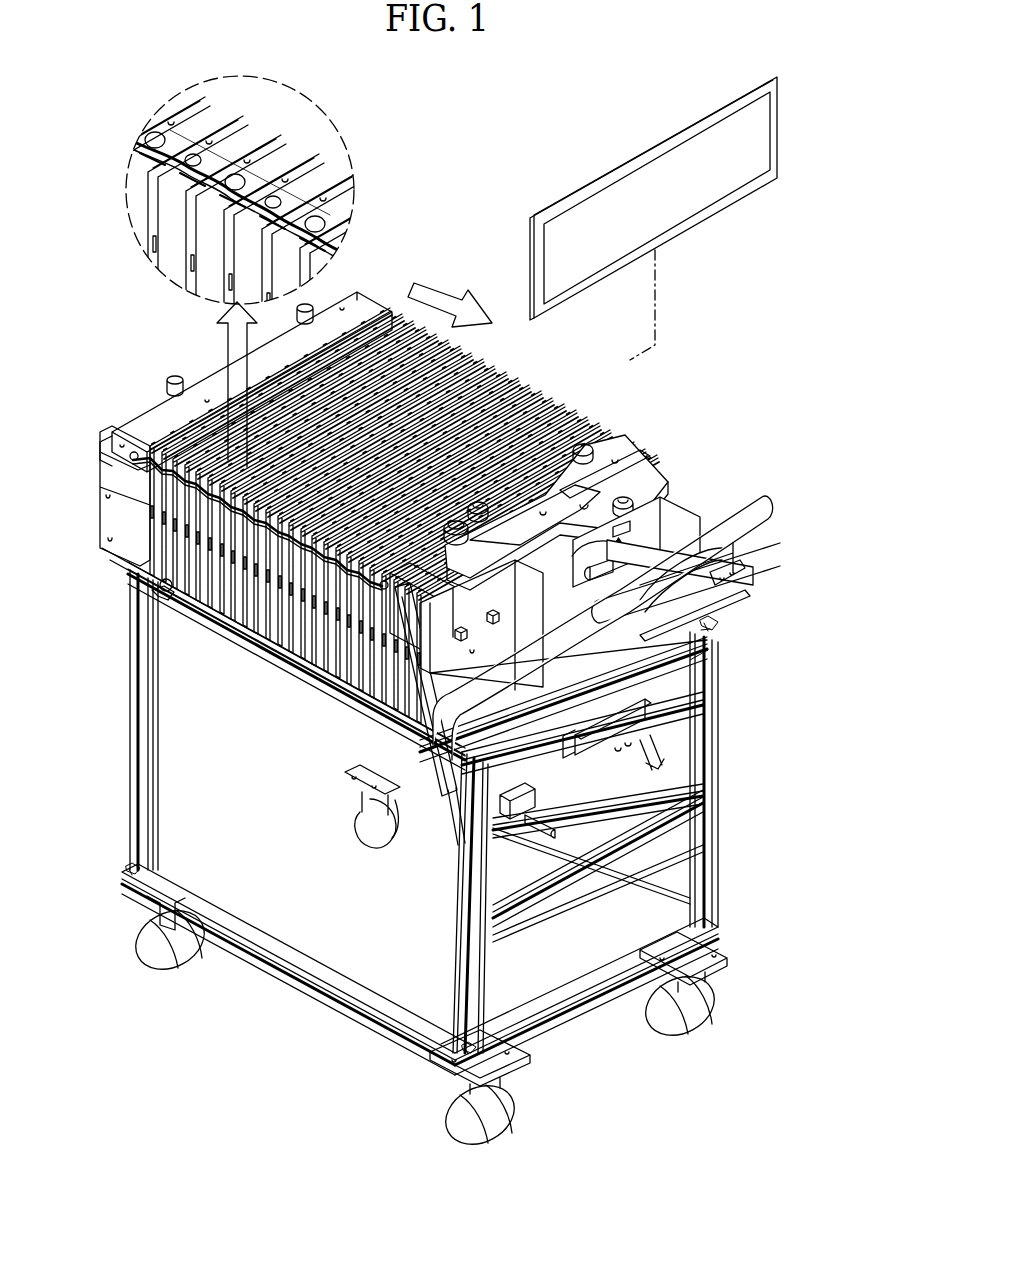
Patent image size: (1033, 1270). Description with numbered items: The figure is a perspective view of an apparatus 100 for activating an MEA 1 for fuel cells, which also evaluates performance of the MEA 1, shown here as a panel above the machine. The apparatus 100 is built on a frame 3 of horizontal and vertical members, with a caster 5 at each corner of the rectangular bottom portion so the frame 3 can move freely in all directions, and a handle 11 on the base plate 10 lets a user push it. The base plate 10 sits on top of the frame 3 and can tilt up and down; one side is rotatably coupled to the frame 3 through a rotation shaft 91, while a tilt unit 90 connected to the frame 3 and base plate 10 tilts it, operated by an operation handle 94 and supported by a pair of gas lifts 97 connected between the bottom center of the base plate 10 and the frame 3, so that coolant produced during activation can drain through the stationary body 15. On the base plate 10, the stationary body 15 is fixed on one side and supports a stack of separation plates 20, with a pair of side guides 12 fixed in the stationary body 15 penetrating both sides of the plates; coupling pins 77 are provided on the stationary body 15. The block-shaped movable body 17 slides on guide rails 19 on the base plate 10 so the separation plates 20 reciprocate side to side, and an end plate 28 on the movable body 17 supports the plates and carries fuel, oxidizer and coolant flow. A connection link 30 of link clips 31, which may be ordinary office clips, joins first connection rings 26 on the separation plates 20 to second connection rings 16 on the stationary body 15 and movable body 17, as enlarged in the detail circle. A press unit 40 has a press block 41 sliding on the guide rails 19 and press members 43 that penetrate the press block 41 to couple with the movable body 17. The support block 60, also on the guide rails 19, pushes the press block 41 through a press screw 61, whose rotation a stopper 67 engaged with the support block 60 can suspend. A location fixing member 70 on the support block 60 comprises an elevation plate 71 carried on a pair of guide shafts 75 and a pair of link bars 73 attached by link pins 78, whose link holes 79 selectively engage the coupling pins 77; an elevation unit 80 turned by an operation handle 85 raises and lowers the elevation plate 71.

The MEA 1 is at (646, 133).
The frame 3 is at (434, 859).
The caster 5 is at (172, 955).
The base plate 10 is at (708, 640).
The handle 11 is at (764, 512).
The side guide 12 is at (357, 660).
The stationary body 15 is at (210, 372).
The second connection ring 16 is at (113, 478).
The movable body 17 is at (392, 835).
The guide rail 19 is at (692, 668).
The separation plate 20 is at (136, 547).
The first connection ring 26 is at (243, 208).
The end plate 28 is at (365, 835).
The connection link 30 is at (160, 600).
The link clip 31 is at (270, 168).
The press unit 40 is at (425, 800).
The press block 41 is at (287, 650).
The press member 43 is at (507, 823).
The support block 60 is at (735, 552).
The press screw 61 is at (714, 604).
The stopper 67 is at (744, 574).
The location fixing member 70 is at (594, 456).
The elevation plate 71 is at (597, 507).
The link bar 73 is at (543, 500).
The guide shaft 75 is at (667, 577).
The coupling pin 77 is at (168, 390).
The link pin 78 is at (456, 522).
The link hole 79 is at (479, 503).
The elevation unit 80 is at (705, 560).
The operation handle 85 is at (700, 530).
The tilt unit 90 is at (612, 760).
The rotation shaft 91 is at (158, 598).
The operation handle 94 is at (553, 827).
The gas lift 97 is at (452, 802).
The apparatus for activating an MEA 100 is at (455, 89).